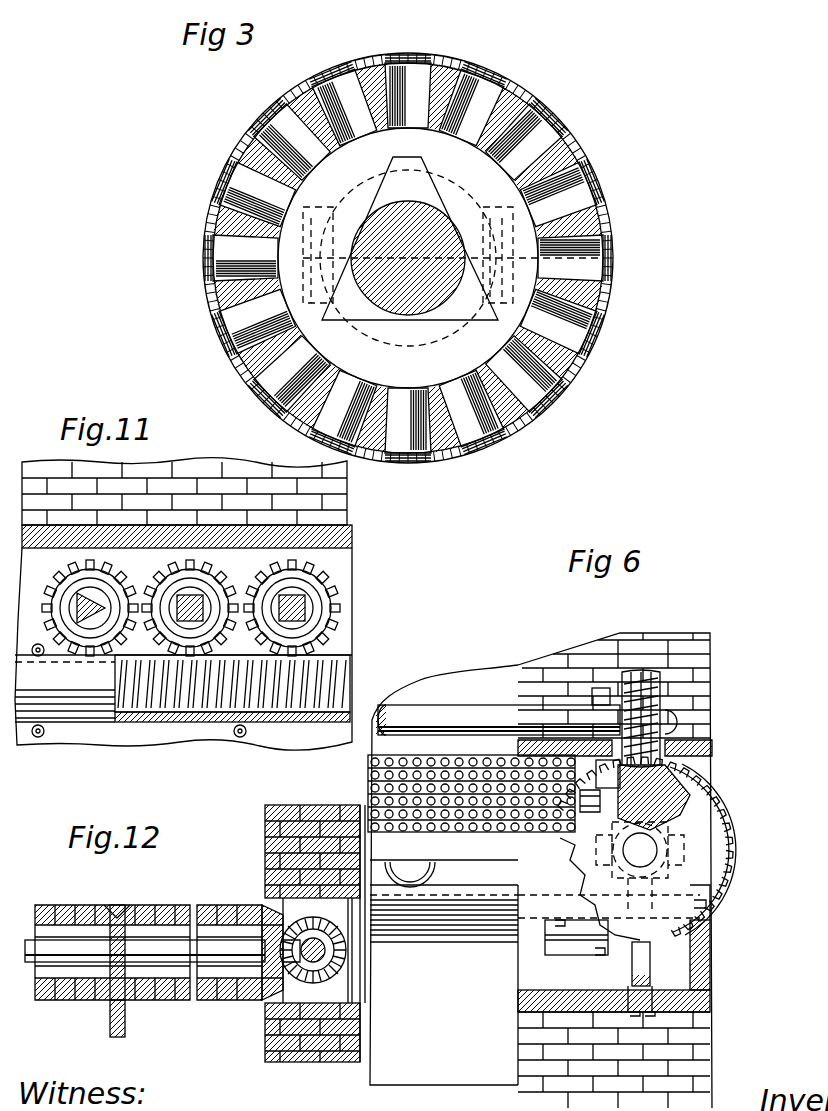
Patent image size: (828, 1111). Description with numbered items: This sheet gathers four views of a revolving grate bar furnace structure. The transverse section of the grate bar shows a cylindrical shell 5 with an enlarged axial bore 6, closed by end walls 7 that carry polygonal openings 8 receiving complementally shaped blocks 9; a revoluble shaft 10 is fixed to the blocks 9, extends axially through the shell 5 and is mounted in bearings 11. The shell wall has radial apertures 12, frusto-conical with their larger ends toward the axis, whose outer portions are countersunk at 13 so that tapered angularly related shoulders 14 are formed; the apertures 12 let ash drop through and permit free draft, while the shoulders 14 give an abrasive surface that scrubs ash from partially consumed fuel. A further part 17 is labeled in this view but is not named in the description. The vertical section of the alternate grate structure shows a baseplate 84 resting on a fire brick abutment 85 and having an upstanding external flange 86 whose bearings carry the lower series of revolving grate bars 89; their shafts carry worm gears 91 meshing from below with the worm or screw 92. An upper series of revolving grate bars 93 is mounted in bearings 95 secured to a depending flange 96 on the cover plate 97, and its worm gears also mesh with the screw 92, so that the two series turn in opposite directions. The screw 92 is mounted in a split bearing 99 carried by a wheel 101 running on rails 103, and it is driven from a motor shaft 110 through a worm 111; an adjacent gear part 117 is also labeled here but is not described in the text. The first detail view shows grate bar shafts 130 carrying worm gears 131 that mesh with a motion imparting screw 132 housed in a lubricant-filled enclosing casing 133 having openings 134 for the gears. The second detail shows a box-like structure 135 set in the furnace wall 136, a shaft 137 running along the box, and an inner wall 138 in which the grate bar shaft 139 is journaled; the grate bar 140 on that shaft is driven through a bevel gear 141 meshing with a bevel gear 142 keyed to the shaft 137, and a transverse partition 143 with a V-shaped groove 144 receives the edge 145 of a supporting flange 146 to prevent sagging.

In FIG. 3, the cylindrical shell 5 is at (470, 74).
In FIG. 3, the axial bore 6 is at (408, 258).
In FIG. 3, the end walls 7 is at (410, 238).
In FIG. 3, the polygonal openings 8 is at (352, 222).
In FIG. 3, the blocks 9 is at (408, 258).
In FIG. 3, the revoluble shaft 10 is at (414, 555).
In FIG. 3, the bearings 11 is at (600, 258).
In FIG. 3, the radial apertures 12 is at (408, 258).
In FIG. 3, the countersunk portions 13 is at (398, 60).
In FIG. 3, the tapered shoulders 14 is at (383, 62).
In FIG. 3, the coil 17 is at (562, 137).
In FIG. 6, the baseplate 84 is at (715, 1001).
In FIG. 6, the abutment 85 is at (670, 1040).
In FIG. 6, the upstanding external flange 86 is at (712, 980).
In FIG. 6, the lower series of revolving grate bars 89 is at (445, 925).
In FIG. 6, the worm gears 91 is at (572, 832).
In FIG. 6, the worm or screw 92 is at (705, 830).
In FIG. 6, the upper series of revolving grate bars 93 is at (368, 775).
In FIG. 6, the bearings 95 is at (600, 820).
In FIG. 6, the depending flange 96 is at (600, 760).
In FIG. 6, the cover plate 97 is at (712, 745).
In FIG. 6, the split bearing 99 is at (660, 850).
In FIG. 6, the wheel 101 is at (650, 963).
In FIG. 6, the rails 103 is at (626, 986).
In FIG. 6, the drive shaft 110 is at (456, 716).
In FIG. 6, the worm 111 is at (662, 698).
In FIG. 6, the worm gear 117 is at (690, 805).
In FIG. 11, the shafts 130 is at (203, 608).
In FIG. 11, the worm gears 131 is at (172, 590).
In FIG. 11, the motion imparting screw 132 is at (180, 690).
In FIG. 11, the enclosing casing 133 is at (128, 722).
In FIG. 11, the openings 134 is at (350, 655).
In FIG. 12, the box-like structure 135 is at (335, 898).
In FIG. 12, the furnace wall 136 is at (275, 1010).
In FIG. 12, the shaft 137 is at (308, 962).
In FIG. 12, the inner wall 138 is at (262, 908).
In FIG. 12, the grate bar shaft 139 is at (133, 930).
In FIG. 12, the grate bar 140 is at (140, 905).
In FIG. 12, the bevel gear 141 is at (414, 555).
In FIG. 12, the bevel gear 142 is at (337, 990).
In FIG. 12, the transverse partition 143 is at (110, 970).
In FIG. 12, the V-shaped groove 144 is at (116, 905).
In FIG. 12, the edge 145 is at (112, 992).
In FIG. 12, the supporting flange 146 is at (112, 1020).